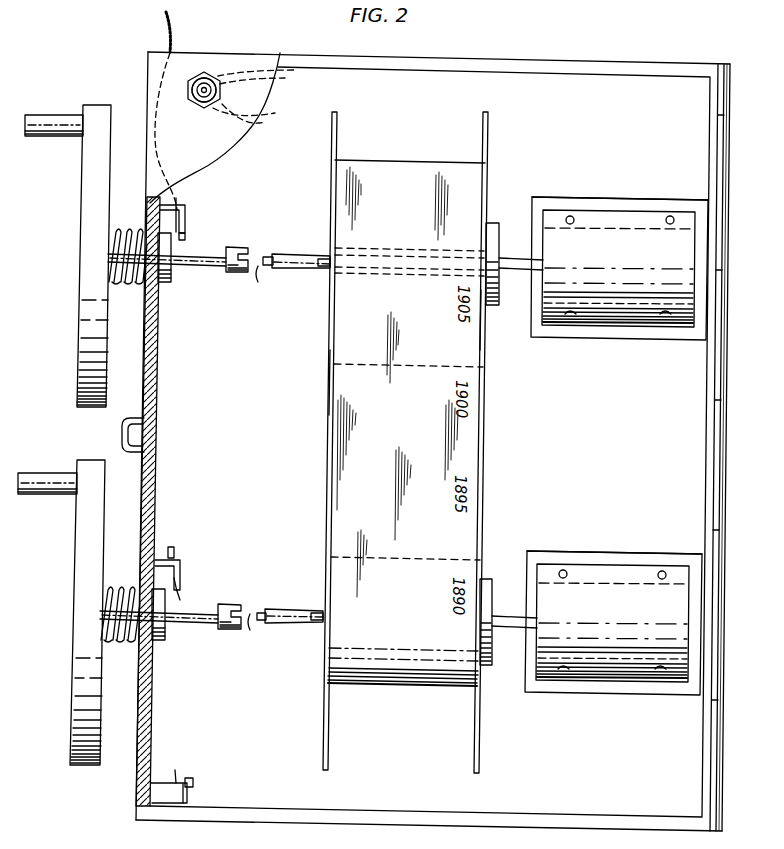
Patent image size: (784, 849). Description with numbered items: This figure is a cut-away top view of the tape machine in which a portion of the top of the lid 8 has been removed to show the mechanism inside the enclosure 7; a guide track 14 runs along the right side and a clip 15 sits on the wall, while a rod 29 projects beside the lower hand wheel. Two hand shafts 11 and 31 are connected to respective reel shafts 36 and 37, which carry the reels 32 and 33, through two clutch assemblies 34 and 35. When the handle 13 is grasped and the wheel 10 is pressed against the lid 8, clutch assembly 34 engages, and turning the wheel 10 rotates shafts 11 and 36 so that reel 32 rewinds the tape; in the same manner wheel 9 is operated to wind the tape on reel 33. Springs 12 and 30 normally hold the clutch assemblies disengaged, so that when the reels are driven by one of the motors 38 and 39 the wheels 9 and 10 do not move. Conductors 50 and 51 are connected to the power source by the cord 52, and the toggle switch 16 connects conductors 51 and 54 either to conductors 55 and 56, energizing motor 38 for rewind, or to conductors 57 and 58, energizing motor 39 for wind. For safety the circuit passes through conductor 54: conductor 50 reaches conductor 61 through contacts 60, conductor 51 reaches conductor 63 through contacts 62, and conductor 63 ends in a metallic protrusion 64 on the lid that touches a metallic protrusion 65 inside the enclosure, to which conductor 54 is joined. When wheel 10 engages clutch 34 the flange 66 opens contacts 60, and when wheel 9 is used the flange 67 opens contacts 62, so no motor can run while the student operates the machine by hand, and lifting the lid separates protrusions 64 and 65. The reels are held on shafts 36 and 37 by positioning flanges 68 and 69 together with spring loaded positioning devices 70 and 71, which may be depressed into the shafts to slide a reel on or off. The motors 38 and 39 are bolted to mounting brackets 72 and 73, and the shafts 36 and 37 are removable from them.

The enclosure 7 is at (573, 822).
The lid 8 is at (144, 489).
The wheel 9 is at (70, 732).
The wheel 10 is at (77, 373).
The shaft 11 is at (186, 268).
The spring 12 is at (116, 281).
The handle 13 is at (30, 138).
The guide track 14 is at (720, 832).
The clip 15 is at (122, 436).
The toggle switch 16 is at (189, 96).
The rod 29 is at (27, 496).
The spring 30 is at (109, 639).
The shaft 31 is at (180, 621).
The reel 32 is at (332, 120).
The reel 33 is at (326, 483).
The clutch assembly 34 is at (268, 280).
The clutch assembly 35 is at (257, 627).
The shaft 36 is at (294, 258).
The shaft 37 is at (300, 611).
The motor 38 is at (619, 268).
The motor 39 is at (613, 623).
The conductor 50 is at (159, 150).
The conductor 51 is at (201, 78).
The cord 52 is at (167, 28).
The conductor 54 is at (204, 172).
The conductor 55 is at (284, 80).
The conductor 56 is at (296, 70).
The conductor 57 is at (263, 122).
The conductor 58 is at (273, 113).
The contacts 60 is at (186, 216).
The conductor 61 is at (185, 240).
The contacts 62 is at (181, 579).
The conductor 63 is at (181, 594).
The metallic protrusion 64 is at (196, 795).
The metallic protrusion 65 is at (189, 779).
The flange 66 is at (167, 284).
The flange 67 is at (164, 641).
The positioning flange 68 is at (491, 226).
The positioning flange 69 is at (488, 580).
The spring loaded positioning device 70 is at (323, 268).
The spring loaded positioning device 71 is at (321, 622).
The mounting bracket 72 is at (672, 187).
The mounting bracket 73 is at (670, 541).